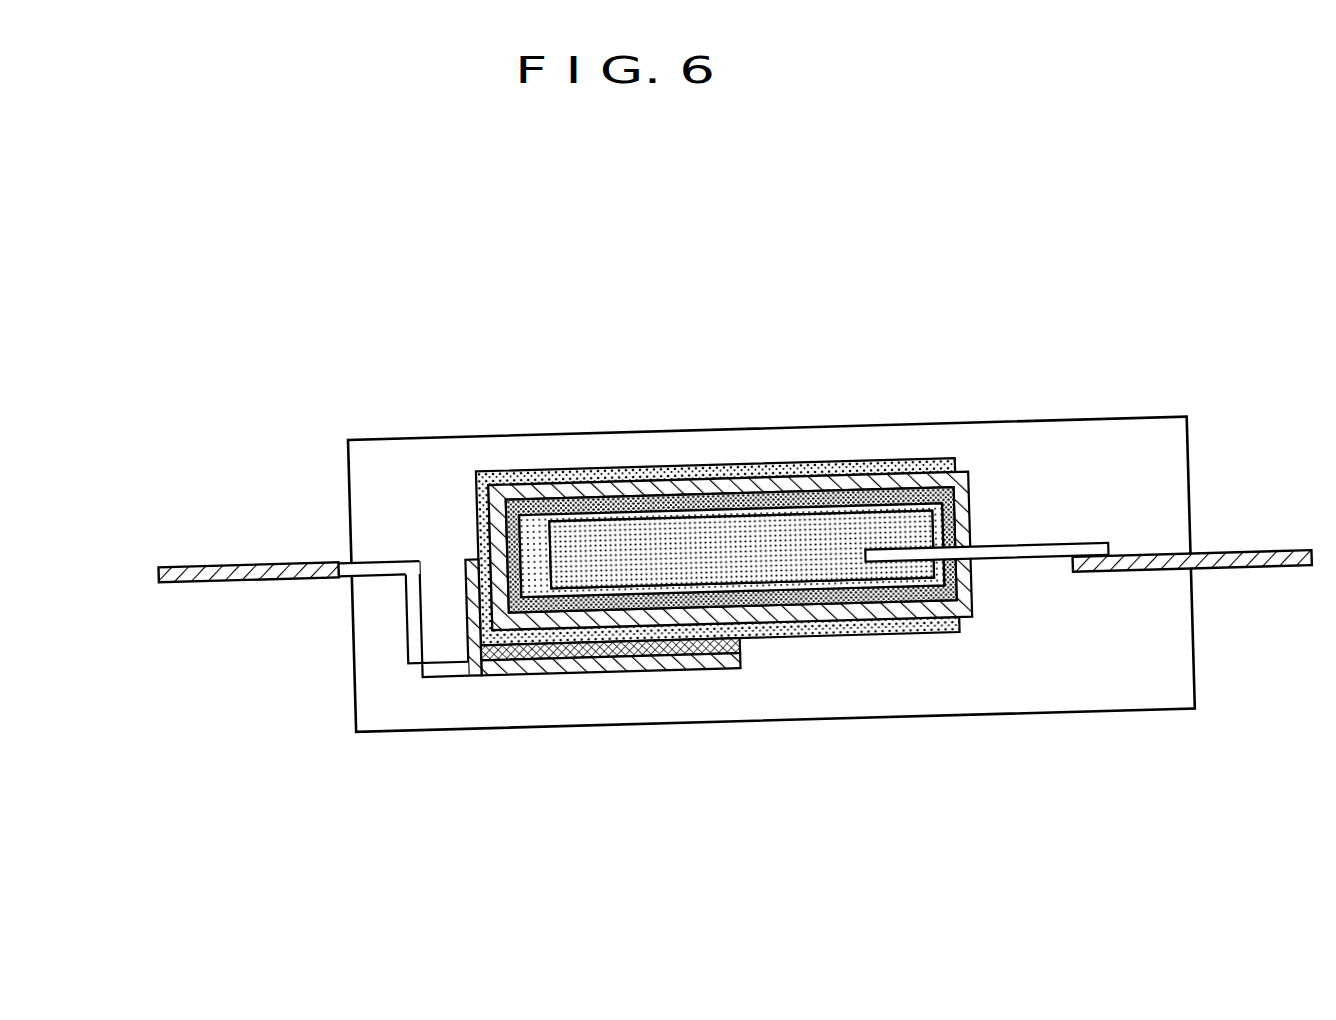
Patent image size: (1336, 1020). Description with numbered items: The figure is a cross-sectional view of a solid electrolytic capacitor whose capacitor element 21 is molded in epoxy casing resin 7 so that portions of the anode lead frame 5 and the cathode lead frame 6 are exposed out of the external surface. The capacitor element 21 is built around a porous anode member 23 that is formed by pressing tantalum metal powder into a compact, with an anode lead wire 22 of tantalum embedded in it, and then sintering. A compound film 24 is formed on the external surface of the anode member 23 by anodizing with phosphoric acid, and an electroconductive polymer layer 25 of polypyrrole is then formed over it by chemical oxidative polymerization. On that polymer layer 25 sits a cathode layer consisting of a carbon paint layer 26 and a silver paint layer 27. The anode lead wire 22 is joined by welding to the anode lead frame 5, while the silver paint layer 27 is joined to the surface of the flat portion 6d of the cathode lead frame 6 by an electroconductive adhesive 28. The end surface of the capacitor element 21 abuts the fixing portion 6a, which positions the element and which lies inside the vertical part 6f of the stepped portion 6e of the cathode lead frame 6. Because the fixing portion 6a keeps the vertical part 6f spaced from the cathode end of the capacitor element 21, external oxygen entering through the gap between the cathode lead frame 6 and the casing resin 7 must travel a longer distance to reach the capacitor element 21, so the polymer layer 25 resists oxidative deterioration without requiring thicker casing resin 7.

The anode lead frame 5 is at (1232, 553).
The cathode lead frame 6 is at (278, 563).
The fixing portion 6a is at (478, 676).
The flat portion 6d is at (573, 658).
The stepped portion 6e is at (378, 566).
The vertical part 6f is at (410, 627).
The casing resin 7 is at (1135, 470).
The capacitor element 21 is at (868, 640).
The anode lead wire 22 is at (1015, 546).
The anode member 23 is at (818, 540).
The compound film 24 is at (776, 508).
The electroconductive polymer layer 25 is at (682, 492).
The carbon paint layer 26 is at (598, 474).
The silver paint layer 27 is at (478, 470).
The electroconductive adhesive 28 is at (668, 650).